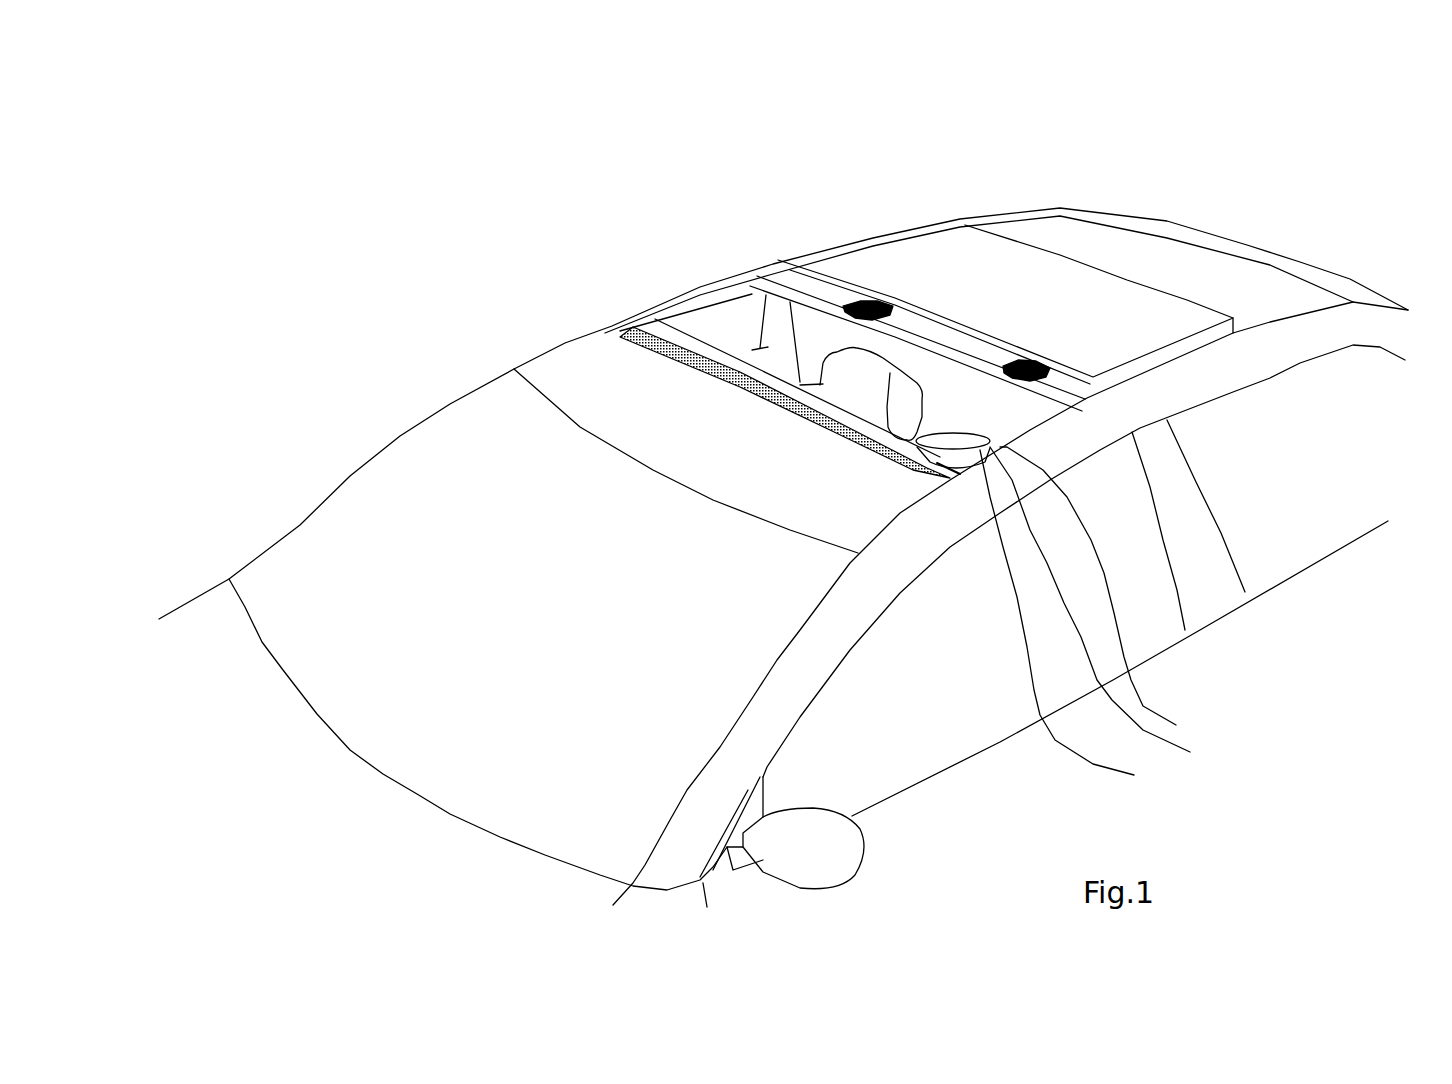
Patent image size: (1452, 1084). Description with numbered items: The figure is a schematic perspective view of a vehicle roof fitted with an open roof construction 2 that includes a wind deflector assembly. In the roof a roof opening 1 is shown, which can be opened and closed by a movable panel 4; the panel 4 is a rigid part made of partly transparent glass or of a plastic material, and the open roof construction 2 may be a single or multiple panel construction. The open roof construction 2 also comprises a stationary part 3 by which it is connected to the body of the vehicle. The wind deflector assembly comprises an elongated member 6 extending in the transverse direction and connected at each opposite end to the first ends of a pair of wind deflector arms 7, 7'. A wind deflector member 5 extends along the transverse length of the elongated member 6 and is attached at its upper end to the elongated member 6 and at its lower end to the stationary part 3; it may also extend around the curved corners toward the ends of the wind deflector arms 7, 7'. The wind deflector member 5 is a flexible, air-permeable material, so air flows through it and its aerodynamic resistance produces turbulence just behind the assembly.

The roof opening 1 is at (783, 359).
The open roof construction 2 is at (790, 285).
The stationary part 3 is at (832, 251).
The movable panel 4 is at (1005, 275).
The wind deflector member 5 is at (1071, 622).
The elongated member 6 is at (1101, 596).
The wind deflector arm 7 is at (1106, 612).
The wind deflector arm 7' is at (939, 212).